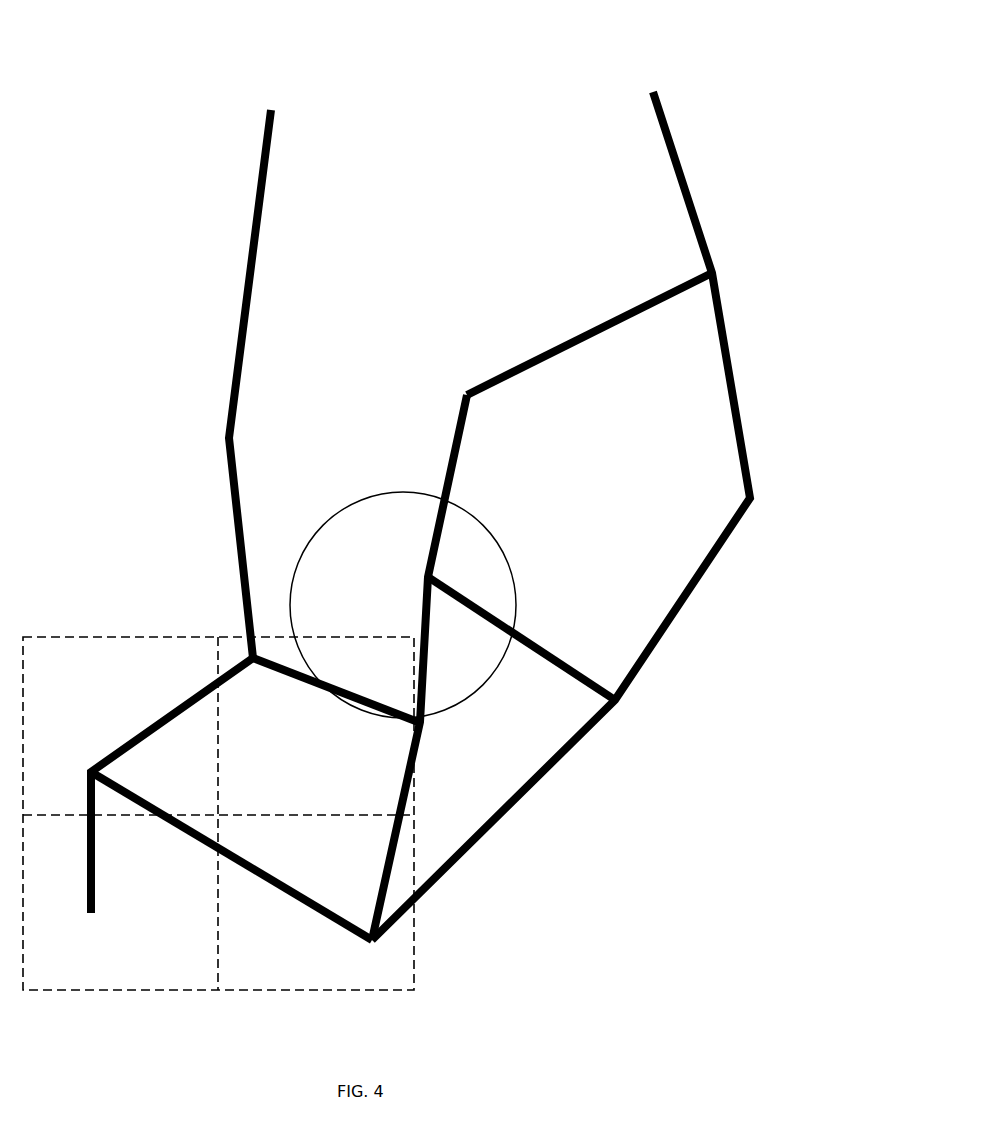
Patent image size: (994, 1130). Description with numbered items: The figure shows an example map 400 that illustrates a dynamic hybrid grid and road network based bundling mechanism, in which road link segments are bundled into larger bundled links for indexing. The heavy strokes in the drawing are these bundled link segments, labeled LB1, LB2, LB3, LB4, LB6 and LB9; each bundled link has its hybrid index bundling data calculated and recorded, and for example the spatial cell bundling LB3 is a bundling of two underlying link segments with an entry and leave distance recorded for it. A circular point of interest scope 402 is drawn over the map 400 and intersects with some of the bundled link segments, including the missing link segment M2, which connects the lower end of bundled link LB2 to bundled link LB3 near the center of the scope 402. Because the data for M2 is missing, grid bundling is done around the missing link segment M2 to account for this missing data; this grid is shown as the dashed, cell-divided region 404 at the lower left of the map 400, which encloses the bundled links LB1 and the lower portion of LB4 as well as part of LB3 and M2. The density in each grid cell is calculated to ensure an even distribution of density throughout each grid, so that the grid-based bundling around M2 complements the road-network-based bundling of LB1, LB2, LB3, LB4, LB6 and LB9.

The example map 400 is at (78, 85).
The point of interest scope 402 is at (482, 540).
The grid region 404 is at (52, 637).
The limb bone 1 LB1 is at (175, 708).
The limb bone 2 LB2 is at (252, 212).
The spatial cell bundling LB3 is at (448, 438).
The limb bone 4 LB4 is at (630, 306).
The limb bone 6 LB6 is at (676, 148).
The limb bone 9 LB9 is at (552, 652).
The missing link segment M2 is at (301, 690).